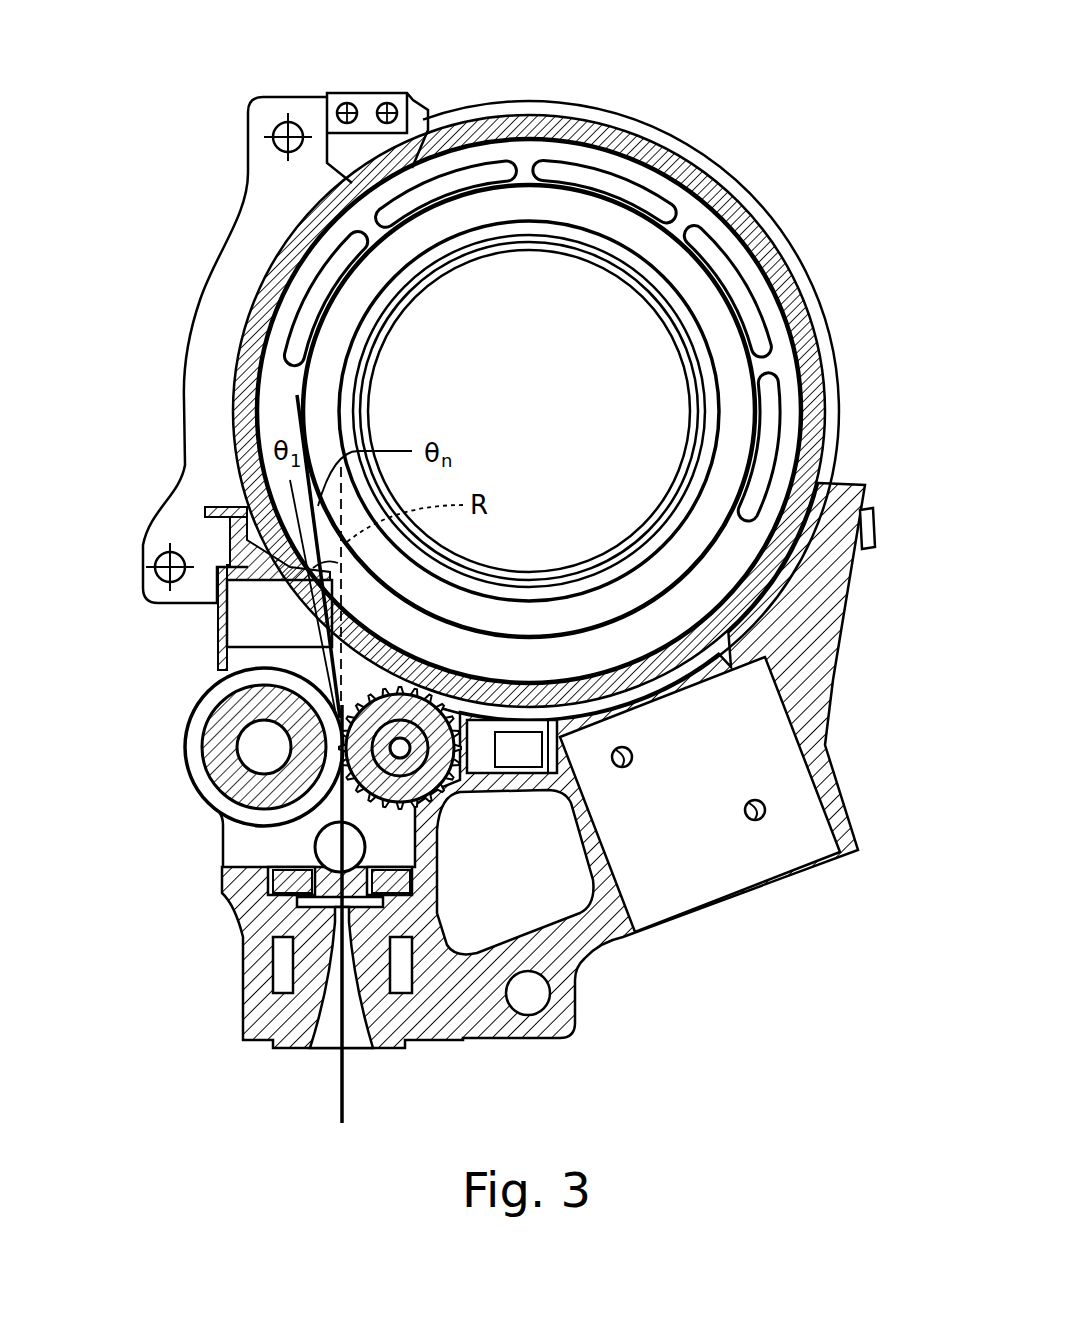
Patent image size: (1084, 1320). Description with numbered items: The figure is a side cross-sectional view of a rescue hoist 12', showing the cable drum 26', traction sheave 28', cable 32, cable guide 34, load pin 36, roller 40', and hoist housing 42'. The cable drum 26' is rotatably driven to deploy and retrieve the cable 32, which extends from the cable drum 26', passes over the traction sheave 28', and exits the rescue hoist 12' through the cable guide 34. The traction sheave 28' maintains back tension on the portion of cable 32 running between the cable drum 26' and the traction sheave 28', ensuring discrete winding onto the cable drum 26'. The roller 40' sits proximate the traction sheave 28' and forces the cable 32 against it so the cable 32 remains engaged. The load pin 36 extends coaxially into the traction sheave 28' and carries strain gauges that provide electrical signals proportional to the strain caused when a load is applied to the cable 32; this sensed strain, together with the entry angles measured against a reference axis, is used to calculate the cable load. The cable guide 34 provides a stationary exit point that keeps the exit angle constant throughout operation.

The rescue hoist 12' is at (640, 370).
The cable drum 26' is at (575, 411).
The traction sheave 28' is at (214, 739).
The cable 32 is at (345, 1087).
The cable guide 34 is at (310, 1047).
The load pin 36 is at (263, 737).
The roller 40' is at (433, 778).
The hoist housing 42' is at (541, 765).